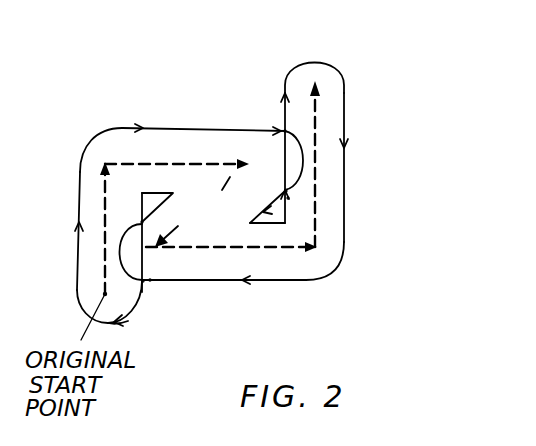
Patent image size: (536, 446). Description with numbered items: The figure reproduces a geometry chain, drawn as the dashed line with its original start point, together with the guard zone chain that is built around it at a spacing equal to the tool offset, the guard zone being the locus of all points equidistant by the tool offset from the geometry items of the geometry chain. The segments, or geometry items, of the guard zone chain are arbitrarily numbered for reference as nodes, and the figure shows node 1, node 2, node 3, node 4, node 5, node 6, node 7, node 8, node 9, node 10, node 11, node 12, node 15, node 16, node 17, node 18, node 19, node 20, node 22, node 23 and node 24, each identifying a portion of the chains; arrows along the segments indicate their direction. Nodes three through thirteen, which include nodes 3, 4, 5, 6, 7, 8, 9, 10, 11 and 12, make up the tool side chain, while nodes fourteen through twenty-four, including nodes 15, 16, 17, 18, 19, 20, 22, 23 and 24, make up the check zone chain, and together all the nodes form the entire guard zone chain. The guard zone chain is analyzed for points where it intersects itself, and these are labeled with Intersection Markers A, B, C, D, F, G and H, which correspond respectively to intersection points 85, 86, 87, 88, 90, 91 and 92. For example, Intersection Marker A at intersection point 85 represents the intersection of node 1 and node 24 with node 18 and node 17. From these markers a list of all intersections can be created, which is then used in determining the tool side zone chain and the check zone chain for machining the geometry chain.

The node 1 is at (143, 296).
The node 2 is at (131, 326).
The node 3 is at (76, 278).
The node 4 is at (88, 150).
The node 5 is at (218, 128).
The node 6 is at (300, 137).
The node 7 is at (300, 167).
The node 8 is at (260, 213).
The node 9 is at (249, 225).
The node 10 is at (231, 237).
The node 11 is at (193, 165).
The node 12 is at (280, 134).
The node 15 is at (346, 95).
The node 16 is at (343, 266).
The node 17 is at (286, 283).
The node 18 is at (132, 276).
The node 19 is at (119, 237).
The node 20 is at (206, 195).
The node 22 is at (120, 228).
The node 23 is at (177, 237).
The node 24 is at (143, 268).
The intersection point 85 is at (150, 280).
The intersection point 86 is at (264, 127).
The intersection point 87 is at (288, 191).
The intersection point 88 is at (288, 198).
The intersection point 90 is at (143, 282).
The intersection point 91 is at (142, 222).
The intersection point 92 is at (191, 181).